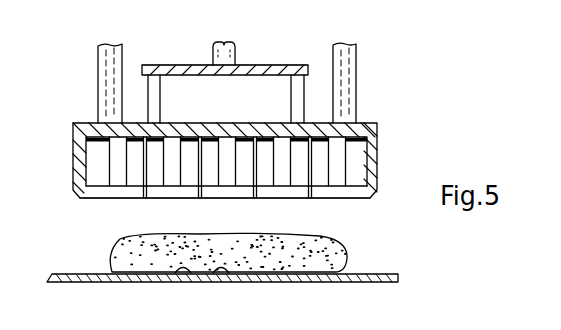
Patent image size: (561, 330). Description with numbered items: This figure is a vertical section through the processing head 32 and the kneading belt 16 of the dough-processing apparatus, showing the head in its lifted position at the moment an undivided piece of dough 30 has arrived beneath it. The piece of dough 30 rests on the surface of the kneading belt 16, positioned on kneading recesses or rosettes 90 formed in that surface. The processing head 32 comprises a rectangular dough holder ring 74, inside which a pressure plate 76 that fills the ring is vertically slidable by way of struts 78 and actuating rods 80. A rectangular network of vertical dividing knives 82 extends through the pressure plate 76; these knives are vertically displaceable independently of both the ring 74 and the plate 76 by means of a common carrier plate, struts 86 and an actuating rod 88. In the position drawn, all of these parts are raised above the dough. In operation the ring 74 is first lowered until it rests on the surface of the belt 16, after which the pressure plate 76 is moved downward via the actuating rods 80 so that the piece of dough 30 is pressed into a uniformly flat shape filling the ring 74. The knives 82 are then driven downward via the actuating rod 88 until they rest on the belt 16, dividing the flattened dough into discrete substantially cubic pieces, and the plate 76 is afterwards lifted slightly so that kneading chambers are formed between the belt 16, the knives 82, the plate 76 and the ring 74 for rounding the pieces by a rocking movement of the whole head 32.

The kneading belt 16 is at (383, 283).
The piece of dough 30 is at (115, 257).
The processing head 32 is at (266, 60).
The dough holder ring 74 is at (377, 155).
The pressure plate 76 is at (348, 190).
The struts 78 is at (286, 158).
The actuating rods 80 is at (108, 78).
The dividing knives 82 is at (197, 168).
The struts 86 is at (294, 93).
The actuating rod 88 is at (229, 42).
The kneading recesses or rosettes 90 is at (184, 275).